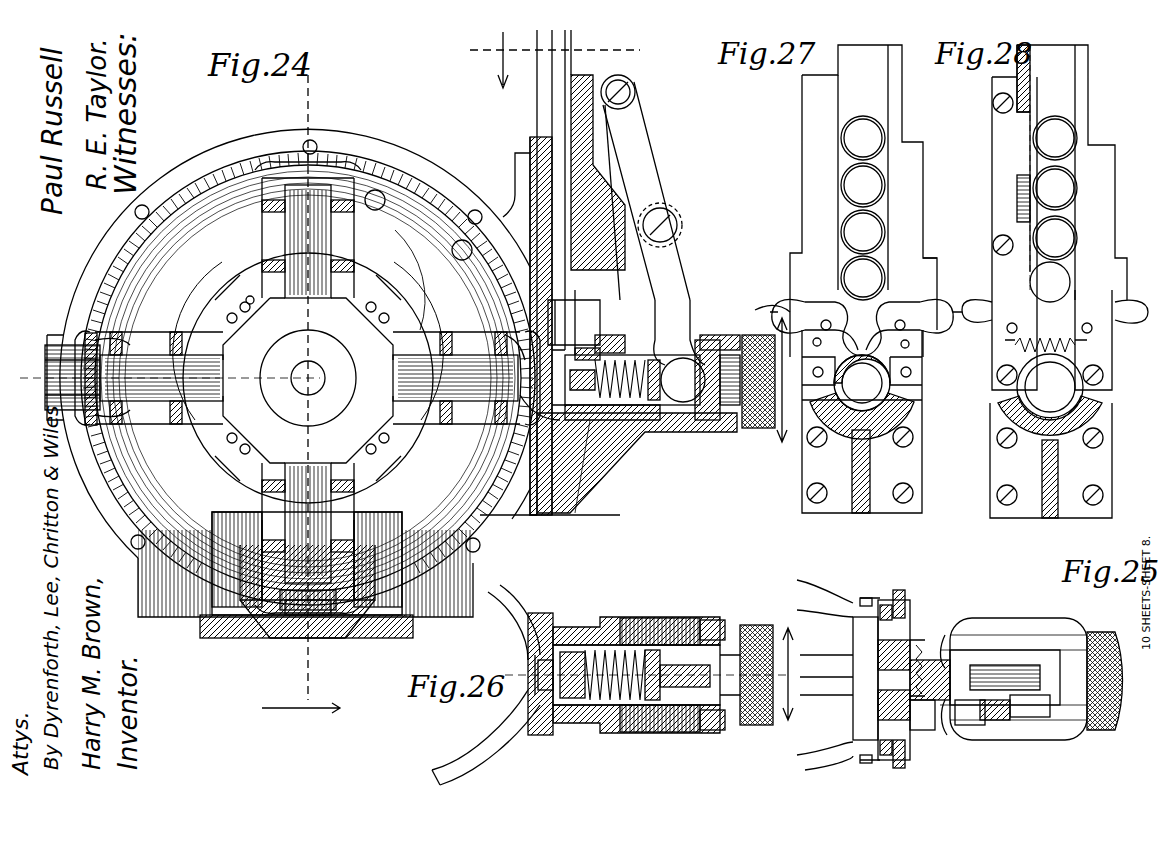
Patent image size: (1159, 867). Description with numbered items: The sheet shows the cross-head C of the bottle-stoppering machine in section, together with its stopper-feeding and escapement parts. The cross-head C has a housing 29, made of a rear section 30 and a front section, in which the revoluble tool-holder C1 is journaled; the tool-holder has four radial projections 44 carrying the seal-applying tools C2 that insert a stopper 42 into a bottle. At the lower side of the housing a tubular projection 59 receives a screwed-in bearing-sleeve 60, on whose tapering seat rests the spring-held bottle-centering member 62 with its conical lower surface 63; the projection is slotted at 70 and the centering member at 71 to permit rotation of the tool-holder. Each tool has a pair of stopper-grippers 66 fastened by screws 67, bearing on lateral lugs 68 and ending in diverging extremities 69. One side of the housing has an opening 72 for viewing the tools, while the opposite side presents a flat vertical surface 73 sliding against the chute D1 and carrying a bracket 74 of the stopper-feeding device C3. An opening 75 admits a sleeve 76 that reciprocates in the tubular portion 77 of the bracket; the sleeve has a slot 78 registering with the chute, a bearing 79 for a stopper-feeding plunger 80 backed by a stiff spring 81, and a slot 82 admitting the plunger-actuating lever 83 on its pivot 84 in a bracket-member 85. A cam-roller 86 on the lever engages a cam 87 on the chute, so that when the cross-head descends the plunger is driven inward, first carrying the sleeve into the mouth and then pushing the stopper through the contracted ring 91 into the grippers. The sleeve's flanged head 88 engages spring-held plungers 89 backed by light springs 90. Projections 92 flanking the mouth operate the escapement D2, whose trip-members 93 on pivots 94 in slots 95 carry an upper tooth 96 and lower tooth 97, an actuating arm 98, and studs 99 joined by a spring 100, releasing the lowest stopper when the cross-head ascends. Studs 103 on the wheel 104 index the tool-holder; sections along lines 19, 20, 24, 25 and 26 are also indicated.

In FIG. 26, the section line 19 is at (545, 625).
In FIG. 24, the section line 20 is at (301, 718).
In FIG. 26, the section line 24 is at (800, 674).
In FIG. 24, the section line 25 is at (547, 60).
In FIG. 24, the section line 26 is at (788, 380).
In FIG. 27, the section line 26 is at (791, 386).
In FIG. 24, the housing 29 is at (370, 148).
In FIG. 26, the housing 29 is at (552, 582).
In FIG. 24, the rear section 30 is at (214, 150).
In FIG. 25, the rear section 30 is at (830, 600).
In FIG. 24, the stopper 42 is at (574, 318).
In FIG. 27, the stopper 42 is at (863, 185).
In FIG. 28, the stopper 42 is at (1062, 244).
In FIG. 24, the radial projections 44 is at (307, 389).
In FIG. 24, the tubular projection 59 is at (385, 525).
In FIG. 24, the bearing-sleeve 60 is at (212, 640).
In FIG. 24, the bottle-centering member 62 is at (265, 640).
In FIG. 24, the conical lower surface 63 is at (330, 640).
In FIG. 24, the stopper-grippers 66 is at (262, 440).
In FIG. 24, the screws 67 is at (246, 301).
In FIG. 24, the lateral lugs 68 is at (262, 267).
In FIG. 24, the diverging extremities 69 is at (490, 430).
In FIG. 24, the slot 70 is at (215, 520).
In FIG. 24, the slot 71 is at (305, 572).
In FIG. 24, the opening 72 is at (48, 375).
In FIG. 24, the flat vertical surface 73 is at (300, 375).
In FIG. 24, the bracket 74 is at (620, 420).
In FIG. 27, the bracket 74 is at (862, 421).
In FIG. 28, the bracket 74 is at (1051, 395).
In FIG. 26, the bracket 74 is at (615, 733).
In FIG. 24, the opening 75 is at (503, 338).
In FIG. 26, the opening 75 is at (528, 640).
In FIG. 24, the sleeve 76 is at (726, 365).
In FIG. 27, the sleeve 76 is at (819, 469).
In FIG. 28, the sleeve 76 is at (1085, 394).
In FIG. 26, the sleeve 76 is at (580, 733).
In FIG. 25, the sleeve 76 is at (1105, 632).
In FIG. 24, the tubular portion 77 is at (680, 433).
In FIG. 26, the tubular portion 77 is at (588, 627).
In FIG. 25, the tubular portion 77 is at (1085, 735).
In FIG. 24, the slot 78 is at (480, 440).
In FIG. 27, the slot 78 is at (862, 356).
In FIG. 28, the slot 78 is at (1050, 387).
In FIG. 24, the bearing 79 is at (600, 440).
In FIG. 24, the stopper-feeding plunger 80 is at (600, 333).
In FIG. 26, the stopper-feeding plunger 80 is at (540, 690).
In FIG. 24, the spring 81 is at (628, 355).
In FIG. 26, the spring 81 is at (600, 705).
In FIG. 24, the slot 82 is at (660, 355).
In FIG. 24, the plunger-actuating lever 83 is at (680, 302).
In FIG. 25, the plunger-actuating lever 83 is at (1035, 683).
In FIG. 24, the pivot 84 is at (678, 222).
In FIG. 25, the pivot 84 is at (1030, 715).
In FIG. 24, the bracket-member 85 is at (690, 270).
In FIG. 25, the bracket-member 85 is at (1015, 660).
In FIG. 24, the cam-roller 86 is at (637, 88).
In FIG. 25, the cam-roller 86 is at (975, 725).
In FIG. 24, the cam 87 is at (602, 200).
In FIG. 28, the cam 87 is at (1017, 200).
In FIG. 24, the flanged head 88 is at (760, 430).
In FIG. 26, the flanged head 88 is at (758, 625).
In FIG. 26, the spring-held plungers 89 is at (722, 620).
In FIG. 25, the spring-held plungers 89 is at (1090, 632).
In FIG. 26, the springs 90 is at (680, 748).
In FIG. 24, the ring 91 is at (537, 255).
In FIG. 26, the ring 91 is at (530, 660).
In FIG. 24, the projections 92 is at (766, 315).
In FIG. 27, the projections 92 is at (925, 360).
In FIG. 28, the projections 92 is at (951, 376).
In FIG. 25, the projections 92 is at (912, 605).
In FIG. 24, the trip-members 93 is at (612, 258).
In FIG. 27, the trip-members 93 is at (867, 316).
In FIG. 27, the pivots 94 is at (863, 172).
In FIG. 28, the pivots 94 is at (1059, 172).
In FIG. 27, the slots 95 is at (945, 266).
In FIG. 27, the upper tooth 96 is at (863, 278).
In FIG. 28, the upper tooth 96 is at (1050, 282).
In FIG. 25, the upper tooth 96 is at (880, 680).
In FIG. 27, the lower tooth 97 is at (862, 383).
In FIG. 27, the actuating arm 98 is at (865, 298).
In FIG. 25, the actuating arm 98 is at (900, 590).
In FIG. 27, the stud 99 is at (908, 350).
In FIG. 28, the stud 99 is at (1049, 317).
In FIG. 25, the stud 99 is at (922, 645).
In FIG. 28, the spring 100 is at (1046, 334).
In FIG. 25, the spring 100 is at (945, 645).
In FIG. 24, the studs 103 is at (376, 205).
In FIG. 24, the wheel 104 is at (422, 268).
In FIG. 24, the cross-head C is at (64, 234).
In FIG. 24, the tool-holder C1 is at (308, 378).
In FIG. 24, the seal-applying tools C2 is at (268, 232).
In FIG. 24, the stopper-feeding device C3 is at (716, 456).
In FIG. 26, the stopper-feeding device C3 is at (623, 579).
In FIG. 25, the stopper-feeding device C3 is at (1001, 772).
In FIG. 24, the chute D1 is at (806, 272).
In FIG. 25, the chute D1 is at (853, 640).
In FIG. 27, the escapement device D2 is at (855, 301).
In FIG. 28, the escapement device D2 is at (1055, 299).
In FIG. 25, the escapement device D2 is at (905, 600).